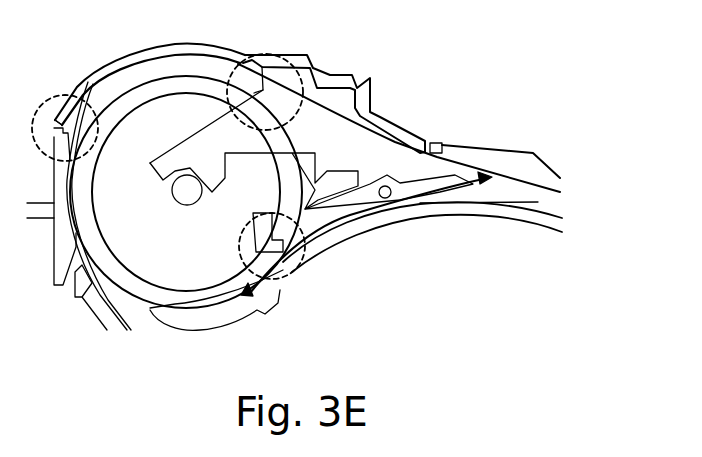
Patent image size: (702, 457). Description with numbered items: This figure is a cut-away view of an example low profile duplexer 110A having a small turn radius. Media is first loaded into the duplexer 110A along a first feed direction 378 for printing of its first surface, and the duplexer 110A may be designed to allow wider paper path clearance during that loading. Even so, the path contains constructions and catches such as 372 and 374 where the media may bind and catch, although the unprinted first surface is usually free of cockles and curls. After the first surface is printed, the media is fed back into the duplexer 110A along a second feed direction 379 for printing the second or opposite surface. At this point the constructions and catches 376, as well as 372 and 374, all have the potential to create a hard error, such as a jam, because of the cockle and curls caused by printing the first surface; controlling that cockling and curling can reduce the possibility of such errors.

The low profile duplexer 110A is at (503, 112).
The construction and catch 372 is at (55, 94).
The construction and catch 374 is at (288, 62).
The construction and catch 376 is at (304, 277).
The first feed direction 378 is at (440, 144).
The second feed direction 379 is at (486, 194).